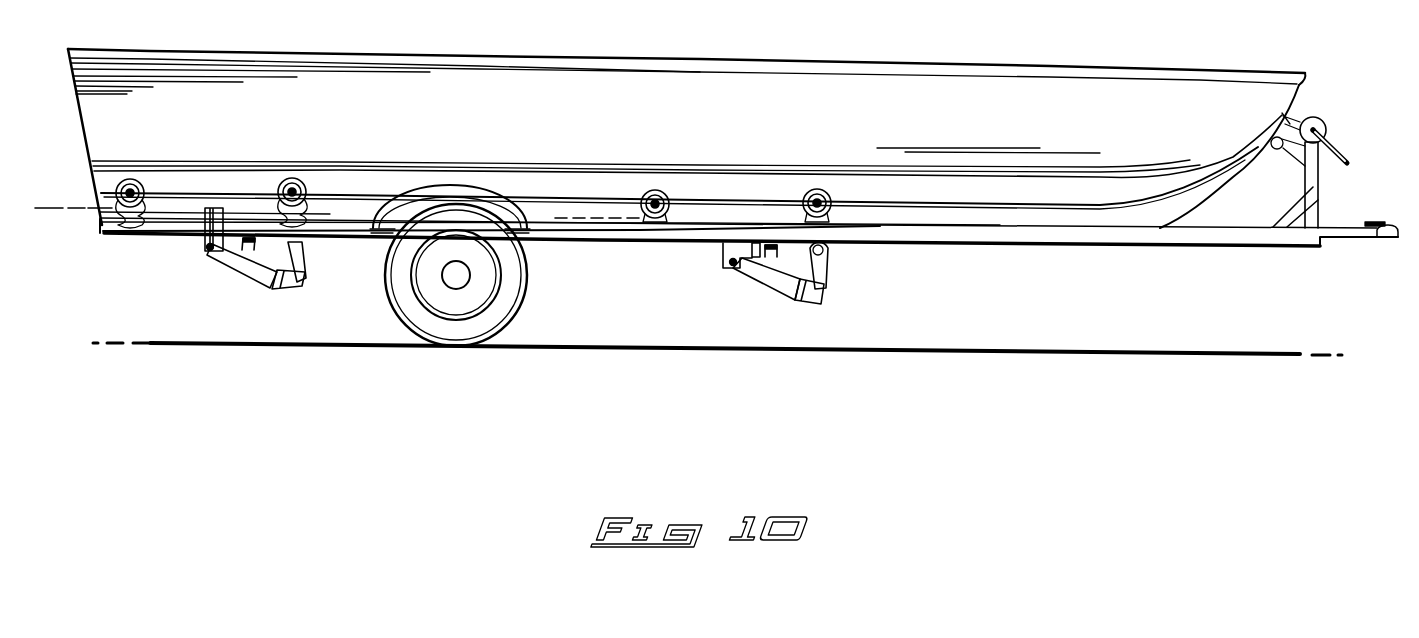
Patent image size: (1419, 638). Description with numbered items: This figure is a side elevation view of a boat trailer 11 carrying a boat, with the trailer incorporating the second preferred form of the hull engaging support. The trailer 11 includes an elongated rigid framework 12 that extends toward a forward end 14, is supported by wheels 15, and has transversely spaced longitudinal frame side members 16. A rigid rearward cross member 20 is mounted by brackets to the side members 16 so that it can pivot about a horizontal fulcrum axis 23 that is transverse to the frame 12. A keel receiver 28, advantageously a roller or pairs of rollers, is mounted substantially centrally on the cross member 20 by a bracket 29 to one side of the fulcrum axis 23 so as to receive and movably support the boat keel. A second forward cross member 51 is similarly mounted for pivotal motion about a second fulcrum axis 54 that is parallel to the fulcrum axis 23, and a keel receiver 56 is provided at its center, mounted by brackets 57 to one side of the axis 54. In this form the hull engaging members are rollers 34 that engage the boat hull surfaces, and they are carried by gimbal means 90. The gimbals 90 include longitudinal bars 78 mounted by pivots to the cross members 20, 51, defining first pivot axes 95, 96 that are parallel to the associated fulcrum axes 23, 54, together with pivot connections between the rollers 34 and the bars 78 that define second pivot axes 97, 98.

The boat trailer 11 is at (656, 297).
The elongated rigid framework 12 is at (960, 237).
The forward end 14 is at (1297, 248).
The wheels 15 is at (515, 263).
The longitudinal frame side members 16 is at (1037, 246).
The rearward cross member 20 is at (293, 290).
The fulcrum axis 23 is at (250, 273).
The keel receiver 28 is at (310, 247).
The bracket 29 is at (307, 260).
The rollers 34 is at (150, 180).
The second forward cross member 51 is at (818, 294).
The second fulcrum axis 54 is at (768, 262).
The keel receiver 56 is at (828, 250).
The brackets 57 is at (824, 273).
The longitudinal bars 78 is at (208, 207).
The gimbal means 90 is at (787, 186).
The first pivot axis 95 is at (213, 260).
The first pivot axis 96 is at (737, 262).
The second pivot axis 97 is at (50, 210).
The second pivot axis 98 is at (573, 210).